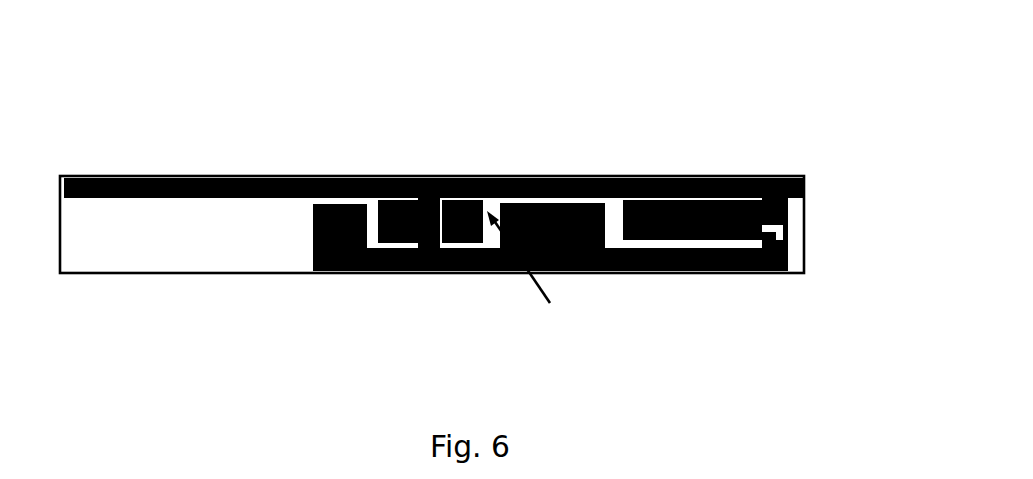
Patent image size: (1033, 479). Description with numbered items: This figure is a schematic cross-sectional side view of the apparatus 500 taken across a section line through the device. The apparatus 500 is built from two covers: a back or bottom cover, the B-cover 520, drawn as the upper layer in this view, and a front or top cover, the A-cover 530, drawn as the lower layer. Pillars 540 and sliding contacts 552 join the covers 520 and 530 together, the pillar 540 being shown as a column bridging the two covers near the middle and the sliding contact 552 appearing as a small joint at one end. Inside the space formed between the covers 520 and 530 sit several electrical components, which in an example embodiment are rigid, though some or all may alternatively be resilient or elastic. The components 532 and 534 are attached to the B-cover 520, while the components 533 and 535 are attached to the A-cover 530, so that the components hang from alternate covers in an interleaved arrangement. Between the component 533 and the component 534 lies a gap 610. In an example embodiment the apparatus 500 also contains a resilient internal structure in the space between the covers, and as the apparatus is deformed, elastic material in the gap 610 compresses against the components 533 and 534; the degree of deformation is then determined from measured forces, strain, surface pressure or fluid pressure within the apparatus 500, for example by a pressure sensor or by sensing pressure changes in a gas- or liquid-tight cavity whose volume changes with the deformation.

The apparatus 500 is at (700, 46).
The B-cover 520 is at (433, 141).
The A-cover 530 is at (550, 307).
The electrical component 532 is at (352, 181).
The electrical component 533 is at (475, 270).
The electrical component 534 is at (552, 181).
The electrical component 535 is at (692, 171).
The pillar 540 is at (450, 183).
The sliding contact 552 is at (778, 285).
The gap 610 is at (547, 273).